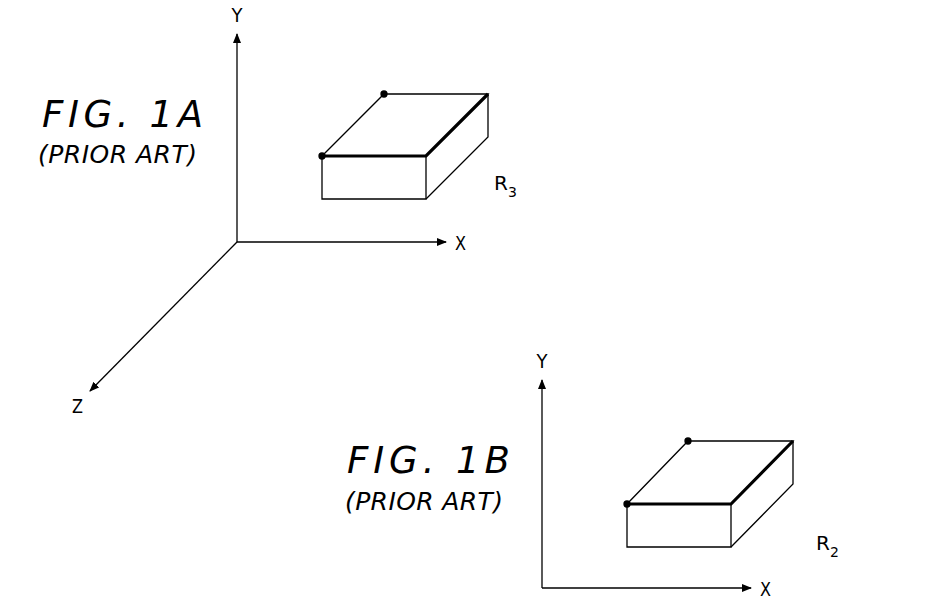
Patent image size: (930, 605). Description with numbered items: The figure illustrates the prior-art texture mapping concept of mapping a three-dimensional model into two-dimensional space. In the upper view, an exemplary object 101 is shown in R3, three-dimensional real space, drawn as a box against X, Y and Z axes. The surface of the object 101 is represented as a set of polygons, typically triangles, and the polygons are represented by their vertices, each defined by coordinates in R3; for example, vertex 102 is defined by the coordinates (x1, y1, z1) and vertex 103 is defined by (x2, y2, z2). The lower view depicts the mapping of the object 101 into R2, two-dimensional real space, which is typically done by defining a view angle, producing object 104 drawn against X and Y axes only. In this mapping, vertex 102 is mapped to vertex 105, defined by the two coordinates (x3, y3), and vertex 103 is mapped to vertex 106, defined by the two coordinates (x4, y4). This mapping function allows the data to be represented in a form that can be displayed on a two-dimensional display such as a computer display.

In FIG. 1A, the object 101 is at (489, 113).
In FIG. 1A, the vertex 102 is at (322, 156).
In FIG. 1A, the vertex 103 is at (384, 94).
In FIG. 1B, the object 104 is at (793, 465).
In FIG. 1B, the vertex 105 is at (627, 504).
In FIG. 1B, the vertex 106 is at (688, 441).